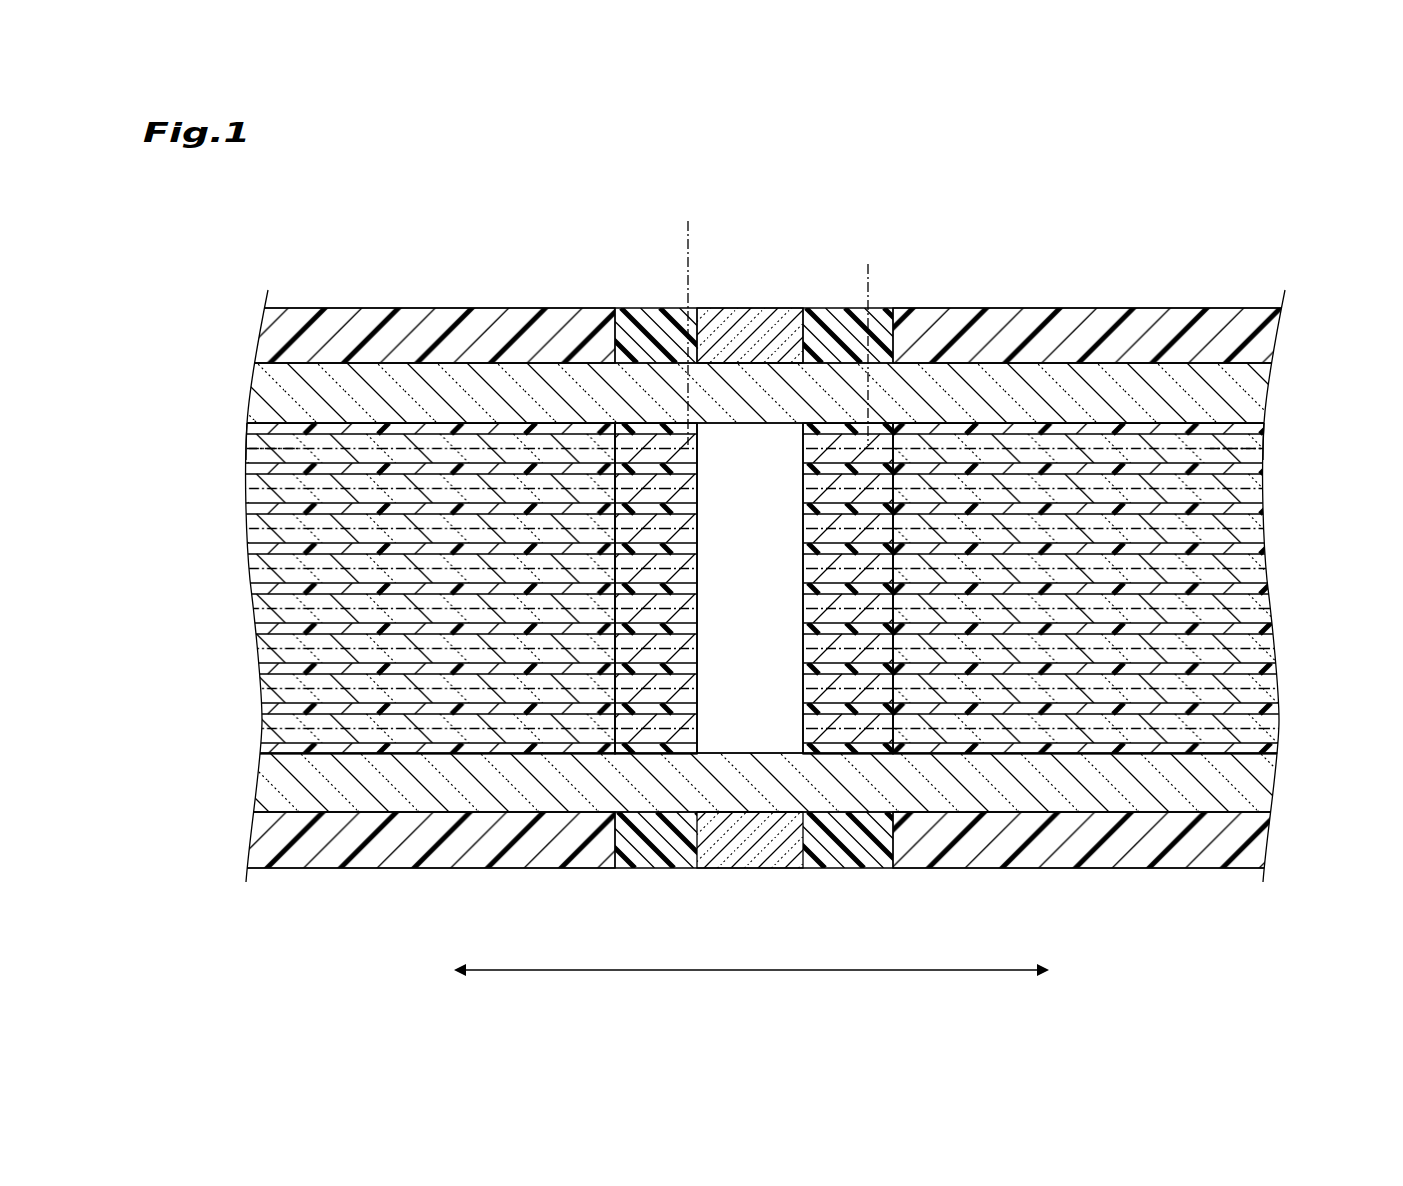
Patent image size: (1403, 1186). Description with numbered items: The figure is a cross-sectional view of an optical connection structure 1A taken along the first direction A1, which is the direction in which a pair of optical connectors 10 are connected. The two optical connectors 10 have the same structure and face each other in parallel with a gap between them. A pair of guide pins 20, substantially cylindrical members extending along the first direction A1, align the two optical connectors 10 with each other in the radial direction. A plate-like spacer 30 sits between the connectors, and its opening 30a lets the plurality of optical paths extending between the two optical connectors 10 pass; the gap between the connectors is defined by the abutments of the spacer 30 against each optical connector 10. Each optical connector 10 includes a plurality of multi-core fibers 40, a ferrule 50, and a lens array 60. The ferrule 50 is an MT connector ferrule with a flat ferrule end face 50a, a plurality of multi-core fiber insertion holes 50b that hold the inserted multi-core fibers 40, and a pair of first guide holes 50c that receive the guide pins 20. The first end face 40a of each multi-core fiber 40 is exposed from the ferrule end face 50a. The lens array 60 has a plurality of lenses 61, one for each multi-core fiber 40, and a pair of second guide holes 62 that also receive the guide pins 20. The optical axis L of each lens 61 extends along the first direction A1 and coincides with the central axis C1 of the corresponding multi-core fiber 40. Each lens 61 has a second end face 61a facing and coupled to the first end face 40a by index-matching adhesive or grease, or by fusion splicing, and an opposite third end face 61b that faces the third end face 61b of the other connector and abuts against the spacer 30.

The optical connection structure 1A is at (1021, 205).
The optical connector 10 is at (304, 302).
The guide pin 20 is at (515, 356).
The spacer 30 is at (737, 302).
The opening 30a is at (741, 365).
The multi-core fiber 40 is at (252, 478).
The first end face 40a is at (630, 437).
The ferrule 50 is at (386, 308).
The ferrule end face 50a is at (624, 858).
The multi-core fiber insertion hole 50b is at (260, 432).
The first guide hole 50c is at (455, 365).
The lens array 60 is at (674, 302).
The lens 61 is at (660, 450).
The second end face 61a is at (605, 437).
The third end face 61b is at (698, 450).
The second guide hole 62 is at (645, 362).
The optical axis L is at (778, 319).
The central axis C1 is at (262, 454).
The first direction A1 is at (751, 995).